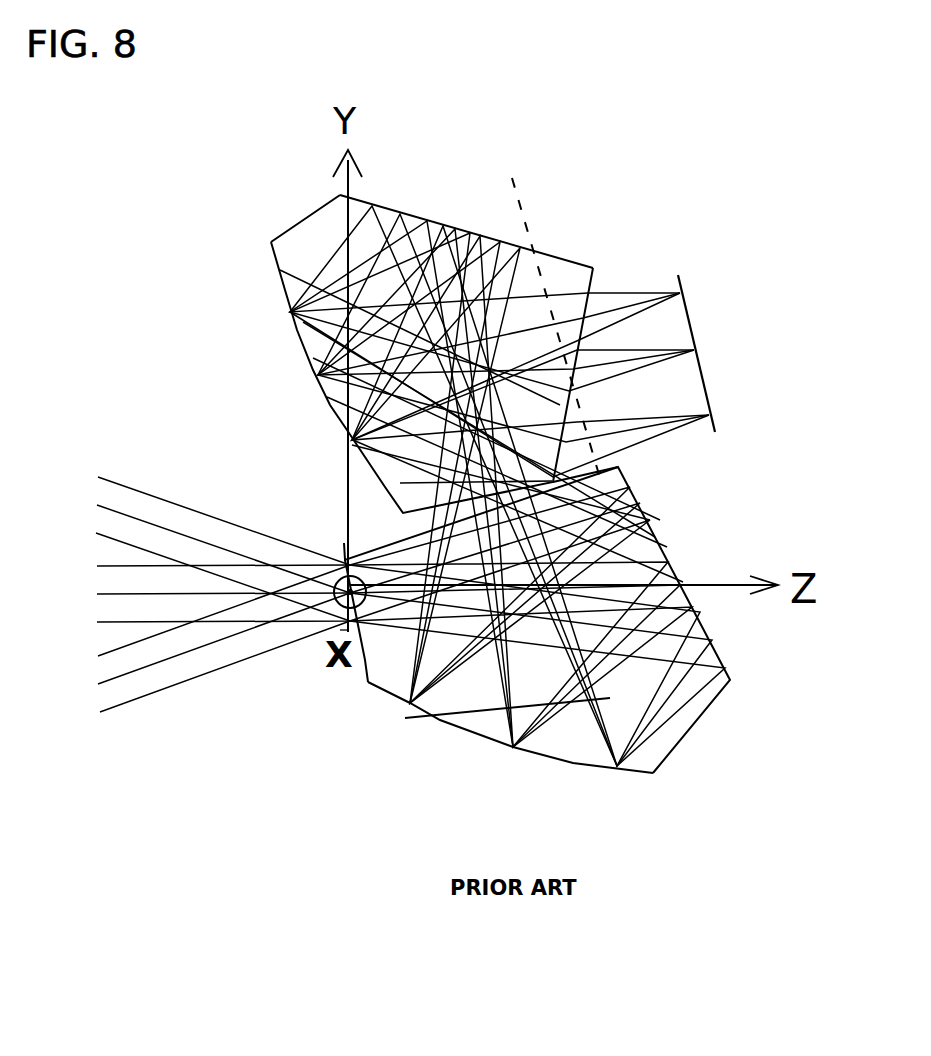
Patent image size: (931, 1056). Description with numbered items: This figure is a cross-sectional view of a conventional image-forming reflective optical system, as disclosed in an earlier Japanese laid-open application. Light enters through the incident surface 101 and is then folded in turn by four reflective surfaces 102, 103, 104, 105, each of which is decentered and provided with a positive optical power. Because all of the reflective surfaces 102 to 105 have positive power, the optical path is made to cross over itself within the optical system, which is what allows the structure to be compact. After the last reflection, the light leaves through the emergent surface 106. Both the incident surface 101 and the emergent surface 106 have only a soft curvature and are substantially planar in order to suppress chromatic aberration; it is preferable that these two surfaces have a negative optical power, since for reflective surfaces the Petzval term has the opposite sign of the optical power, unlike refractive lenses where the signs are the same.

The incident surface 101 is at (372, 700).
The reflective surface 102 is at (557, 620).
The reflective surface 103 is at (510, 762).
The reflective surface 104 is at (466, 202).
The reflective surface 105 is at (393, 354).
The emergent surface 106 is at (642, 319).